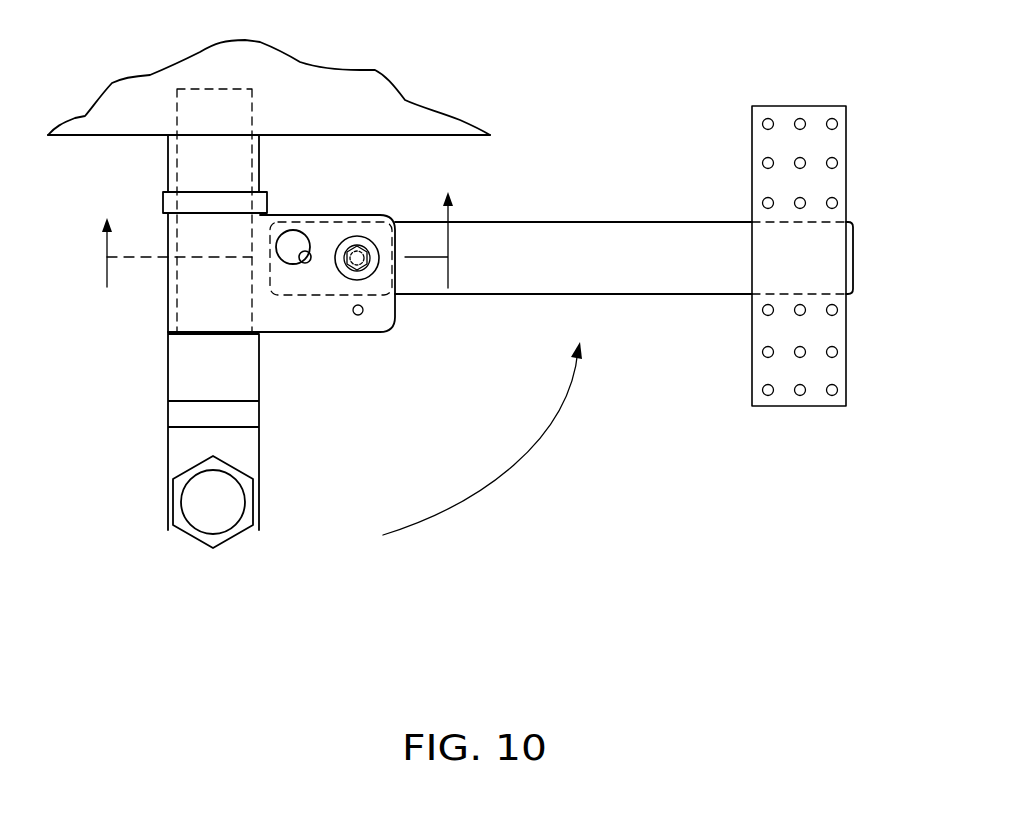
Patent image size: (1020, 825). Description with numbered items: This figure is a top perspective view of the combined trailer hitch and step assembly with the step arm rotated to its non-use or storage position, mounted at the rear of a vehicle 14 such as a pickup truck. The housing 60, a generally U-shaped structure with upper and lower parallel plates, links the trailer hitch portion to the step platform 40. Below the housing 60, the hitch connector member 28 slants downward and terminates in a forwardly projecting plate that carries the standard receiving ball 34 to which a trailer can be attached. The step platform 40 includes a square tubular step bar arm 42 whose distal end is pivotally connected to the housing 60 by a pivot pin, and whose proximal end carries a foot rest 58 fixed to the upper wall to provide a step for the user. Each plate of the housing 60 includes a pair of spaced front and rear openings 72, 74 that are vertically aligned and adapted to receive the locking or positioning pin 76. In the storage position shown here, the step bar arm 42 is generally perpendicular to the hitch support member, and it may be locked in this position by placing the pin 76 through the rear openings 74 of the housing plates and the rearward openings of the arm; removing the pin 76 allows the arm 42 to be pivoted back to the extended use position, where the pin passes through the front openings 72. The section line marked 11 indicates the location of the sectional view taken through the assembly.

The vehicle 14 is at (389, 82).
The housing portion 60 is at (167, 310).
The hitch connector member 28 is at (200, 378).
The receiving ball 34 is at (208, 508).
The step platform portion 40 is at (510, 221).
The step bar arm 42 is at (659, 208).
The locking or positioning pin 76 is at (293, 230).
The rear positioning openings 74 is at (310, 252).
The front positioning openings 72 is at (360, 312).
The foot rest 58 is at (813, 118).
The section line 11- 11 is at (272, 229).